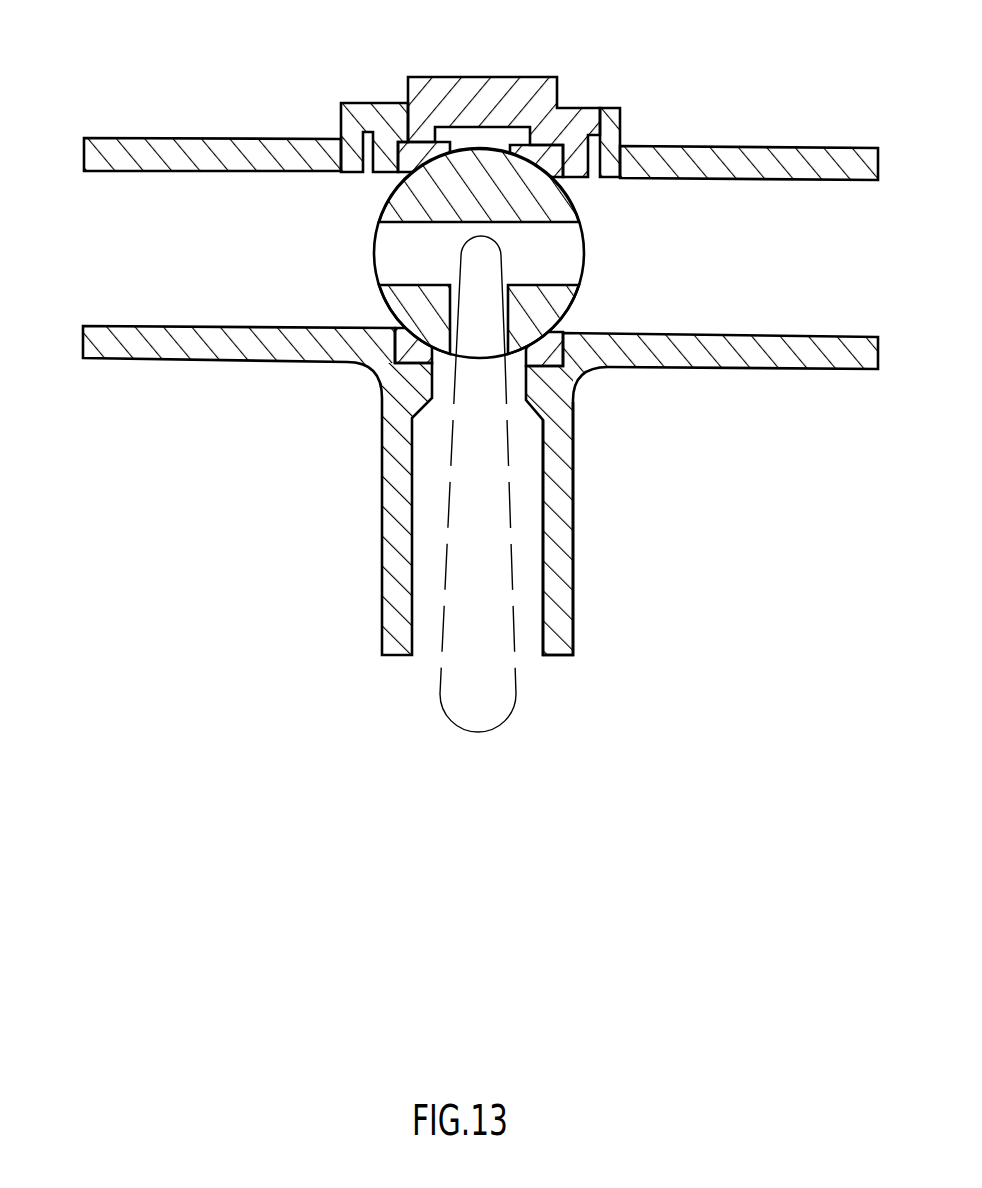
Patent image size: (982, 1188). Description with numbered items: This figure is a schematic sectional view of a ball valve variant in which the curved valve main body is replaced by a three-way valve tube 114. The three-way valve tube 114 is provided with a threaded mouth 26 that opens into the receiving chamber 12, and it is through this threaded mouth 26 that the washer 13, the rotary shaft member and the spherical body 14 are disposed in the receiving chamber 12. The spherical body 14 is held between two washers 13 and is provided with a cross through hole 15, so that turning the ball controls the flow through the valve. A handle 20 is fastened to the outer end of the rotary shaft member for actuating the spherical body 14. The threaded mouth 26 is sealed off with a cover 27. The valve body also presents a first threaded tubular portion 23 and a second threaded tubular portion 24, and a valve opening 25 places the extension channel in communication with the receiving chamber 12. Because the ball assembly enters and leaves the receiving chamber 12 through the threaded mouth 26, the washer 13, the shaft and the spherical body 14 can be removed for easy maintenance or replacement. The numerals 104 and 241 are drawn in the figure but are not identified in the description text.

The receiving chamber 12 is at (587, 207).
The washer 13 is at (408, 150).
The spherical body 14 is at (480, 170).
The cross through hole 15 is at (403, 237).
The handle 20 is at (475, 733).
The first threaded tubular portion 23 is at (802, 180).
The second threaded tubular portion 24 is at (158, 167).
The valve opening 25 is at (442, 357).
The threaded mouth 26 is at (346, 120).
The cover 27 is at (521, 100).
The ball joint assembly 104 is at (336, 742).
The three-way valve tube 114 is at (697, 338).
The tube wall 241 is at (543, 577).